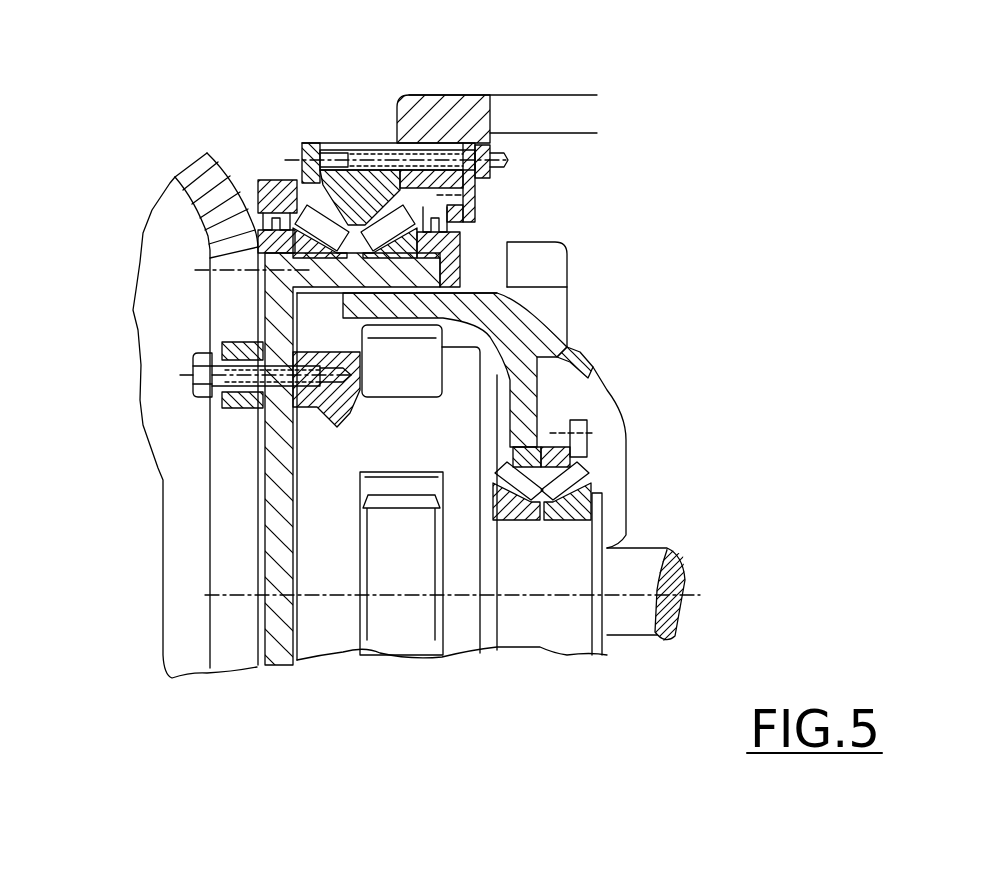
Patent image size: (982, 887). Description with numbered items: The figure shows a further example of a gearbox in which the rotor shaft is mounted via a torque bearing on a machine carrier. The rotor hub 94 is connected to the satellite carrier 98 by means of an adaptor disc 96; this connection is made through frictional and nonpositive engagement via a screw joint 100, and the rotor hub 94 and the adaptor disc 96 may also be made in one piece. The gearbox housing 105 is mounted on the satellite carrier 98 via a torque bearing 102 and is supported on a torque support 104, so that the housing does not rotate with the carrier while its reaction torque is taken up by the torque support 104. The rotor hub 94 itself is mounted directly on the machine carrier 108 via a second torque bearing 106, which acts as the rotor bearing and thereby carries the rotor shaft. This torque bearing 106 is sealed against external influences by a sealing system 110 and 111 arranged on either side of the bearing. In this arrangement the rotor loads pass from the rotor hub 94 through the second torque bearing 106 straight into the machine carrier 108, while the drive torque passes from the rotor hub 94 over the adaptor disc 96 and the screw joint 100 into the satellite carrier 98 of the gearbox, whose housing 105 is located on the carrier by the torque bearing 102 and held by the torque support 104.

The rotor hub 94 is at (203, 180).
The adaptor disc 96 is at (282, 645).
The satellite carrier 98 is at (427, 454).
The screw joint 100 is at (190, 388).
The torque bearing 102 is at (583, 472).
The torque support 104 is at (555, 265).
The gearbox housing 105 is at (513, 447).
The second torque bearing 106 is at (362, 145).
The machine carrier 108 is at (455, 95).
The sealing system 110 is at (258, 178).
The sealing system 111 is at (477, 210).